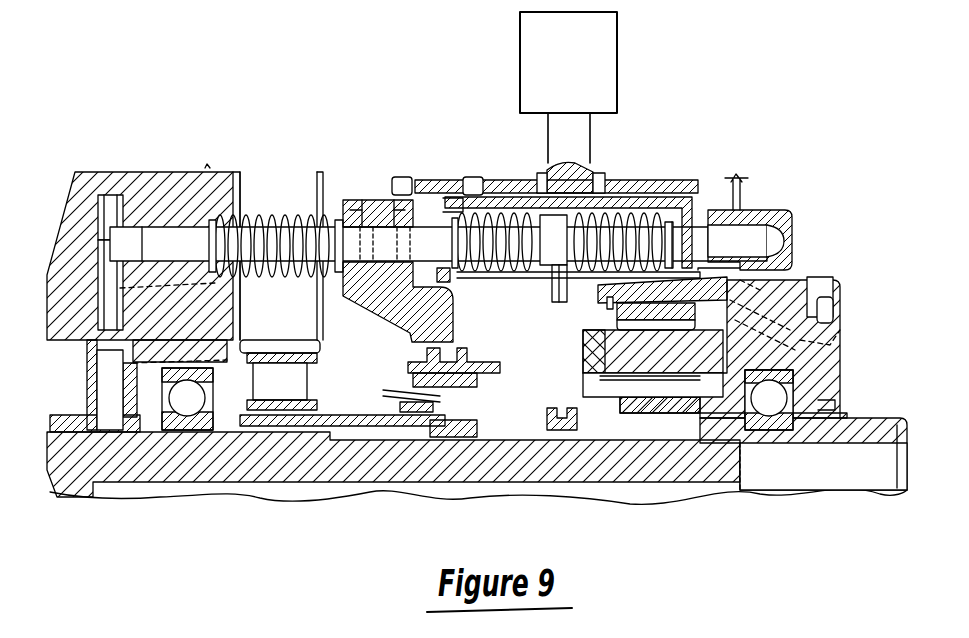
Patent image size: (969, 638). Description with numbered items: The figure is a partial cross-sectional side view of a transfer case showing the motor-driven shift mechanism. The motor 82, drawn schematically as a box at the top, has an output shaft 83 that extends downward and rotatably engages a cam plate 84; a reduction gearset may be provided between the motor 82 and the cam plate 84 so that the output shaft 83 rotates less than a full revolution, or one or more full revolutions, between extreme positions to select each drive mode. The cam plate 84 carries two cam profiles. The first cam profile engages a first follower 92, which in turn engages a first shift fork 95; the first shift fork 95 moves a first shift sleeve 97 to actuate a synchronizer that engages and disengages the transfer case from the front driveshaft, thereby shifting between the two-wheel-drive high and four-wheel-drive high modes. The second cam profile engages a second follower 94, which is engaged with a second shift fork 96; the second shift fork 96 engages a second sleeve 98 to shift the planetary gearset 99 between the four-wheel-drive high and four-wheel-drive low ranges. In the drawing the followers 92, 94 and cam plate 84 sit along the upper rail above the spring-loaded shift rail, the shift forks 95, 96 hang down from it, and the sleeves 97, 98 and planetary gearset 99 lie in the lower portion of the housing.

The motor 82 is at (581, 77).
The output shaft 83 is at (576, 143).
The cam plate 84 is at (507, 178).
The first follower 92 is at (395, 178).
The second follower 94 is at (470, 178).
The first shift fork 95 is at (453, 318).
The second shift fork 96 is at (551, 292).
The first shift sleeve 97 is at (500, 360).
The second sleeve 98 is at (548, 428).
The planetary gearset 99 is at (597, 322).